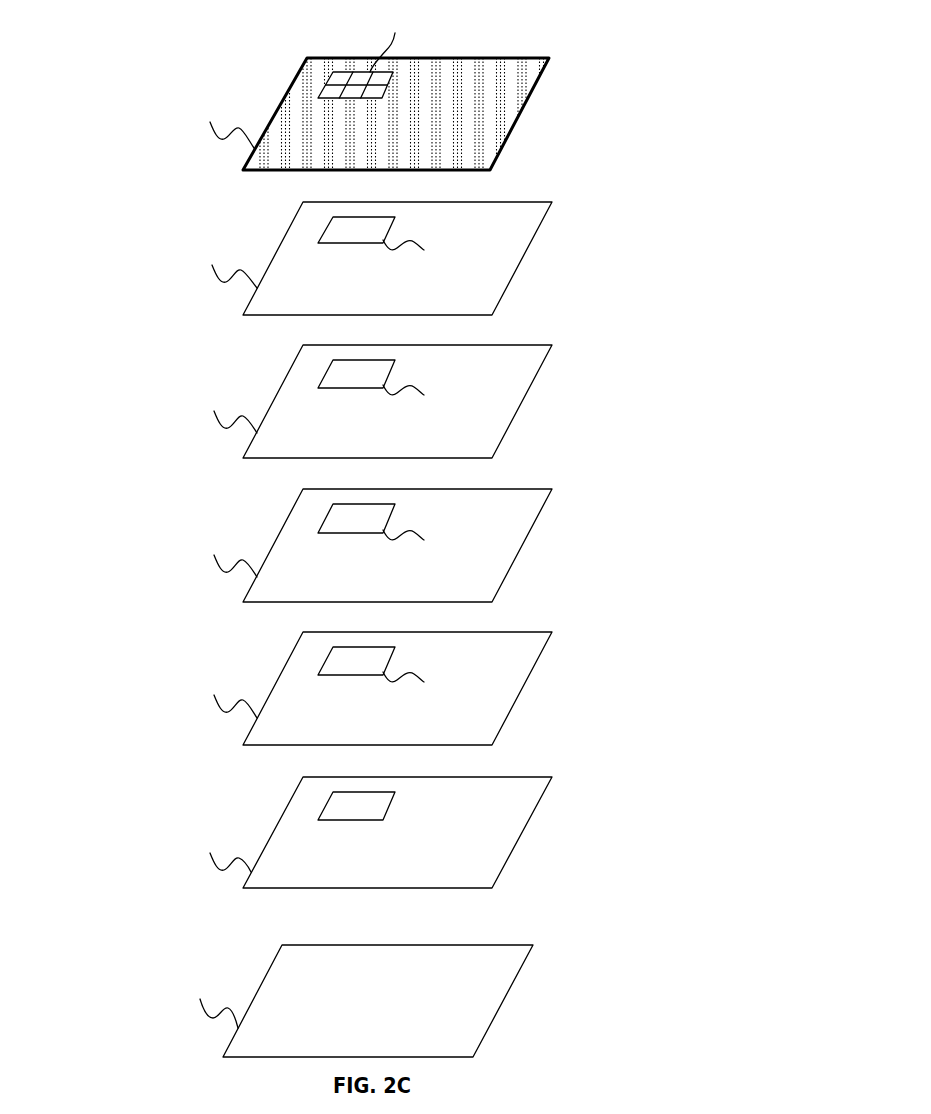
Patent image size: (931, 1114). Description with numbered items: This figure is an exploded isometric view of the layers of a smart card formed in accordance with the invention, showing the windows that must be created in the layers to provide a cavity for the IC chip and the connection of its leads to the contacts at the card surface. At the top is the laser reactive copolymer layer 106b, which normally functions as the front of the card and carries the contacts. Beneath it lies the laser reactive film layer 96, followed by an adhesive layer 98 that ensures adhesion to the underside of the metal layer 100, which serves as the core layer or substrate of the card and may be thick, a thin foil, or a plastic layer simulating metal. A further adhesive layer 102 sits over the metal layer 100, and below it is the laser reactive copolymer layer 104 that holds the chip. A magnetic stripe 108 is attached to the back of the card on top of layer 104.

The laser reactive copolymer layer 106b is at (523, 107).
The thermoplastic layer 96 is at (525, 252).
The adhesive layer 98 is at (524, 398).
The metal layer 100 is at (524, 542).
The adhesive layer 102 is at (524, 686).
The laser reactive film layer 104 is at (525, 827).
The magnetic stripe 108 is at (505, 997).